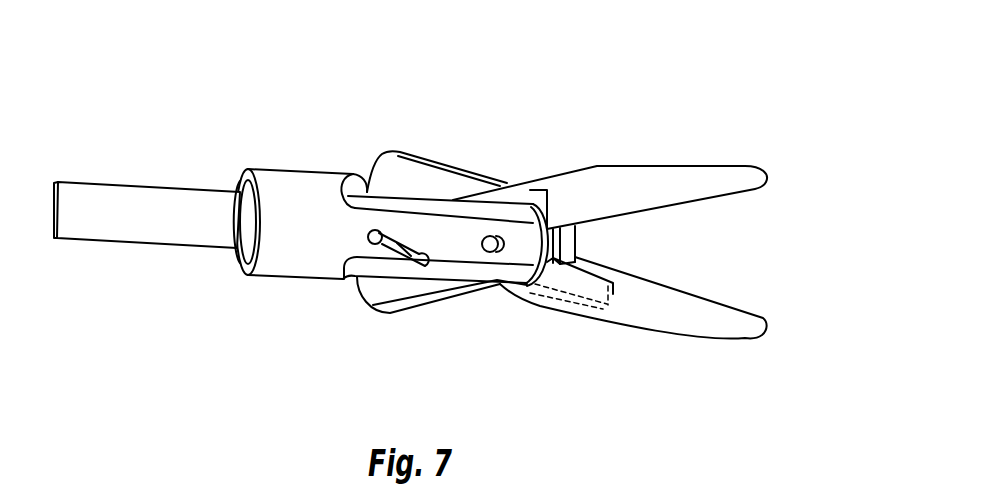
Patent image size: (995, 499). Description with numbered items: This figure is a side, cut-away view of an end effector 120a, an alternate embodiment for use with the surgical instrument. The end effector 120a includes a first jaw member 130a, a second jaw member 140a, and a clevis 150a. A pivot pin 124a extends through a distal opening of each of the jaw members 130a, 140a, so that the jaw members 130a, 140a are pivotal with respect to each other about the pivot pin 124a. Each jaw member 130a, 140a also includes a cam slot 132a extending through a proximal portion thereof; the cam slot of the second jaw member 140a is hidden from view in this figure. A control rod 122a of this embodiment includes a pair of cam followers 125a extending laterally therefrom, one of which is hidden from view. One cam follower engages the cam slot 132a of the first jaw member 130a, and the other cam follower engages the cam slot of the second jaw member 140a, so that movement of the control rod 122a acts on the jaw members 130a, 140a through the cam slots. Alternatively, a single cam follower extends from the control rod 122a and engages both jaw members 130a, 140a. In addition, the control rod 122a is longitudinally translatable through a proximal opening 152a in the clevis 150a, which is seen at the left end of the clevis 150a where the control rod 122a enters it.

The end effector 120a is at (597, 95).
The control rod 122a is at (133, 185).
The pivot pin 124a is at (494, 252).
The cam followers 125a is at (374, 244).
The first jaw member 130a is at (651, 324).
The cam slot 132a is at (405, 266).
The second jaw member 140a is at (668, 172).
The clevis 150a is at (295, 272).
The proximal opening 152a is at (233, 253).